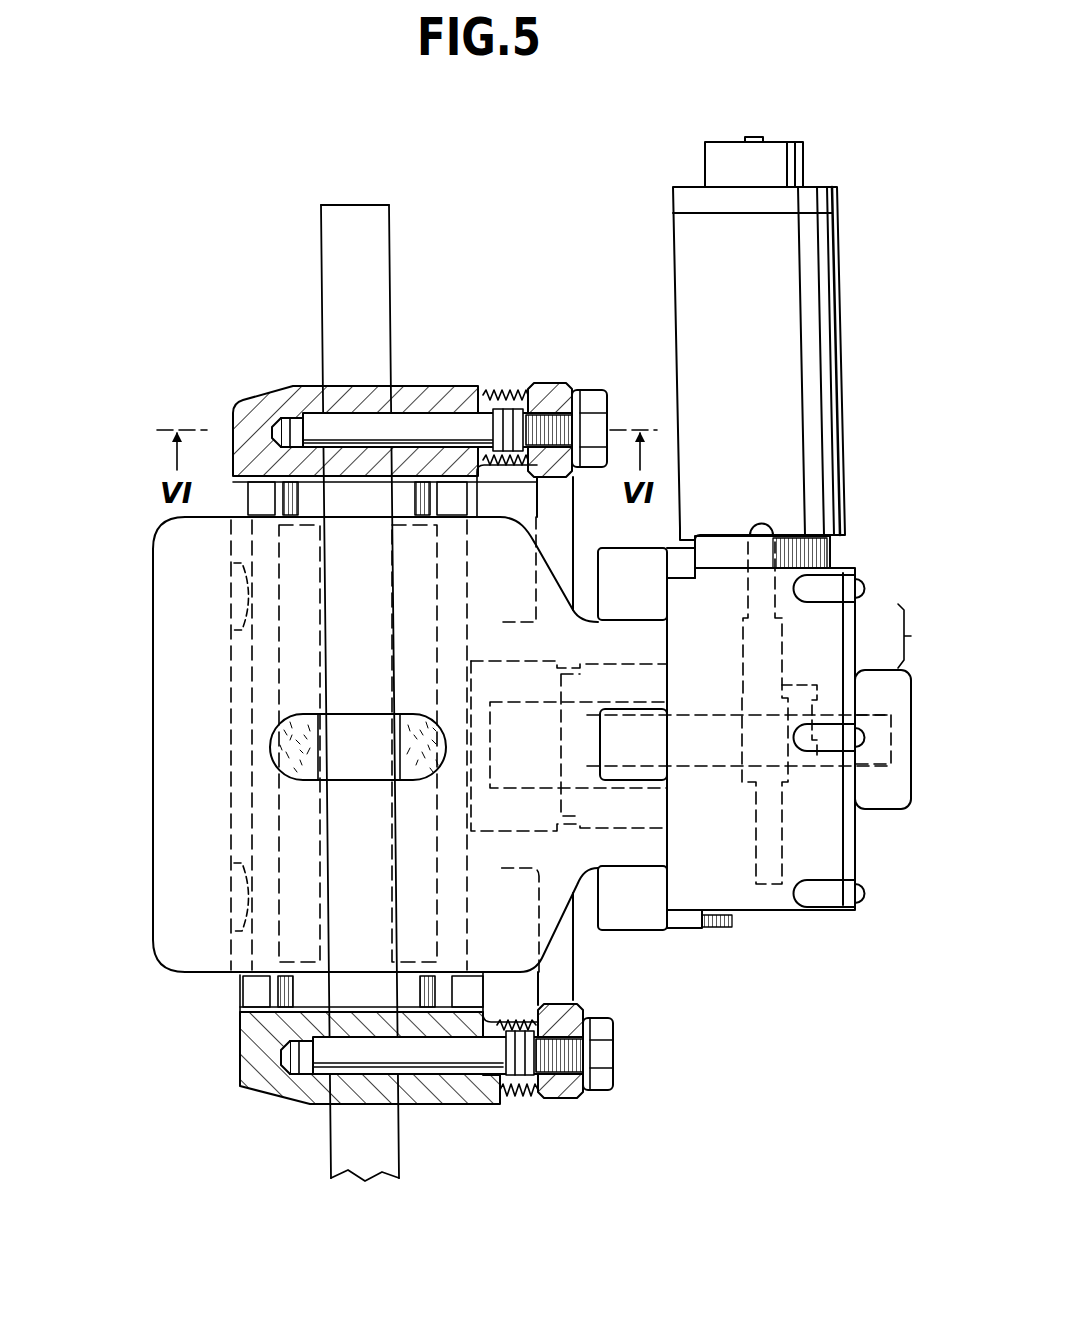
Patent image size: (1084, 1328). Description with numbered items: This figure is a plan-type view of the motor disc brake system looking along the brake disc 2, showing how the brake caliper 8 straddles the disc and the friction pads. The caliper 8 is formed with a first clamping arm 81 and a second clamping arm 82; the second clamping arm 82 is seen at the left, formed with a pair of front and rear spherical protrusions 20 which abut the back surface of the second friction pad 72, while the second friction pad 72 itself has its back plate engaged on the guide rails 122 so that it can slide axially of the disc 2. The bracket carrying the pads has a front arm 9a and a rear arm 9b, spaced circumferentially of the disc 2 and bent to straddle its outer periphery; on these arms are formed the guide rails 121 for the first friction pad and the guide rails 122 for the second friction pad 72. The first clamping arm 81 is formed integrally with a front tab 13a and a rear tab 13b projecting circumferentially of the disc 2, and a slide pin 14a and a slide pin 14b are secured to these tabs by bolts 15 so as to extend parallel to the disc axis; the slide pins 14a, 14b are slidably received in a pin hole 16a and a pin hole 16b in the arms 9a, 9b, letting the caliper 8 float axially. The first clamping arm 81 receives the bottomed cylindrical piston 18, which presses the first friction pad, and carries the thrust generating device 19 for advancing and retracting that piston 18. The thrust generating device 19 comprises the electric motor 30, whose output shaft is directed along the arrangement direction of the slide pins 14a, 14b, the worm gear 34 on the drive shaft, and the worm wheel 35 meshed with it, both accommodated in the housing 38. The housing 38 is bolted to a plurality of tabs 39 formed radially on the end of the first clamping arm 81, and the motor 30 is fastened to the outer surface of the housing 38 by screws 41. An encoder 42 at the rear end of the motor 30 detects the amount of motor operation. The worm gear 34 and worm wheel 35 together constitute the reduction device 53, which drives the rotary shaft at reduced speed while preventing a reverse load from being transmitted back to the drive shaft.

The brake disc 2 is at (373, 262).
The second friction pad 72 is at (296, 716).
The brake caliper 8 is at (160, 977).
The first clamping arm 81 is at (627, 852).
The second clamping arm 82 is at (163, 812).
The front arm 9a is at (450, 1102).
The rear arm 9b is at (438, 386).
The guide rails 121 is at (474, 497).
The guide rails 122 is at (248, 488).
The front tab 13a is at (560, 1099).
The rear tab 13b is at (551, 384).
The slide pin 14a is at (315, 1106).
The slide pin 14b is at (304, 412).
The bolts 15 is at (591, 393).
The pin hole 16a is at (365, 1106).
The pin hole 16b is at (361, 418).
The piston 18 is at (616, 668).
The thrust generating device 19 is at (857, 534).
The spherical protrusions 20 is at (246, 595).
The electric motor 30 is at (770, 296).
The worm gear 34 is at (807, 690).
The worm wheel 35 is at (783, 638).
The housing 38 is at (795, 900).
The tabs 39 is at (609, 743).
The screws 41 is at (761, 522).
The encoder 42 is at (805, 162).
The reduction device 53 is at (922, 636).